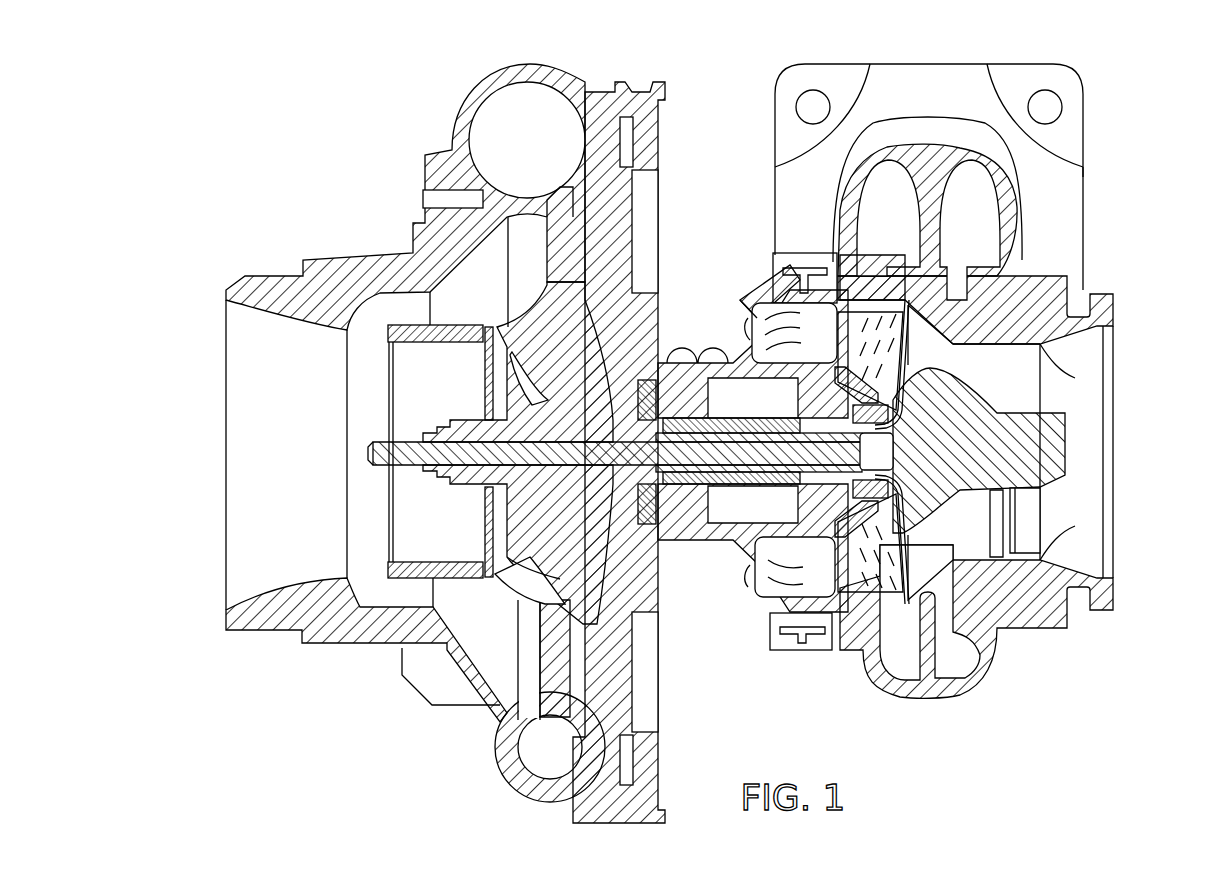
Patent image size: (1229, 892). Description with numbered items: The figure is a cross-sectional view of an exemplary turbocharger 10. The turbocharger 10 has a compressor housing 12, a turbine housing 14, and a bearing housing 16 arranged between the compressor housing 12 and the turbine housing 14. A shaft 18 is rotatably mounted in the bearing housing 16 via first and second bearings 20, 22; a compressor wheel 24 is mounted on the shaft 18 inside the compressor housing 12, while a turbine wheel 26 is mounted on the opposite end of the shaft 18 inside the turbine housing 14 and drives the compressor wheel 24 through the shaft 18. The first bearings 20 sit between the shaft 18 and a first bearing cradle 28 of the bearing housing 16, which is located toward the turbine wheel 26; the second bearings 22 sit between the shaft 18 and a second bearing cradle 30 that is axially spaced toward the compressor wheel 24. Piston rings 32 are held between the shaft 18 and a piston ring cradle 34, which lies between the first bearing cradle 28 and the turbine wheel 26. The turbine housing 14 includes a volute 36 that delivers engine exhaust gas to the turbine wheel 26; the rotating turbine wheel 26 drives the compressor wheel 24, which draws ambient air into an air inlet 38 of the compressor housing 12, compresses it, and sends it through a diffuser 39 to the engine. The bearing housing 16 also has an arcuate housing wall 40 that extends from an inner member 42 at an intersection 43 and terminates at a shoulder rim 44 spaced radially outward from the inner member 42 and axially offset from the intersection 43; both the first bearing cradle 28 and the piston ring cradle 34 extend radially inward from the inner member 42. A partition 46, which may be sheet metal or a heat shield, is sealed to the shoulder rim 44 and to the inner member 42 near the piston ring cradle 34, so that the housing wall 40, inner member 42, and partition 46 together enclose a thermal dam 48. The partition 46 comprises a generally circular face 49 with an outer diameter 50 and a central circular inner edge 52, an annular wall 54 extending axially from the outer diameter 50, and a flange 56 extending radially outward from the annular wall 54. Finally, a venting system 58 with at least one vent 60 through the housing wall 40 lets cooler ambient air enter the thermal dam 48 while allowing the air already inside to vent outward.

The turbocharger 10 is at (1138, 108).
The compressor housing 12 is at (468, 114).
The turbine housing 14 is at (1043, 312).
The bearing housing 16 is at (655, 325).
The shaft 18 is at (710, 456).
The first bearings 20 is at (823, 565).
The second bearings 22 is at (672, 480).
The compressor wheel 24 is at (535, 485).
The turbine wheel 26 is at (1033, 440).
The first bearing cradle 28 is at (833, 528).
The second bearing cradle 30 is at (683, 512).
The piston rings 32 is at (836, 636).
The piston ring cradle 34 is at (913, 520).
The volute 36 is at (1008, 217).
The air inlet 38 is at (288, 473).
The diffuser 39 is at (572, 252).
The housing wall 40 is at (763, 290).
The inner member 42 is at (838, 545).
The intersection 43 is at (745, 348).
The shoulder rim 44 is at (790, 253).
The partition 46 is at (873, 572).
The thermal dam 48 is at (794, 333).
The face 49 is at (903, 395).
The outer diameter 50 is at (940, 300).
The inner edge 52 is at (893, 497).
The annular wall 54 is at (872, 285).
The flange 56 is at (832, 287).
The venting system 58 is at (722, 300).
The vent 60 is at (747, 336).